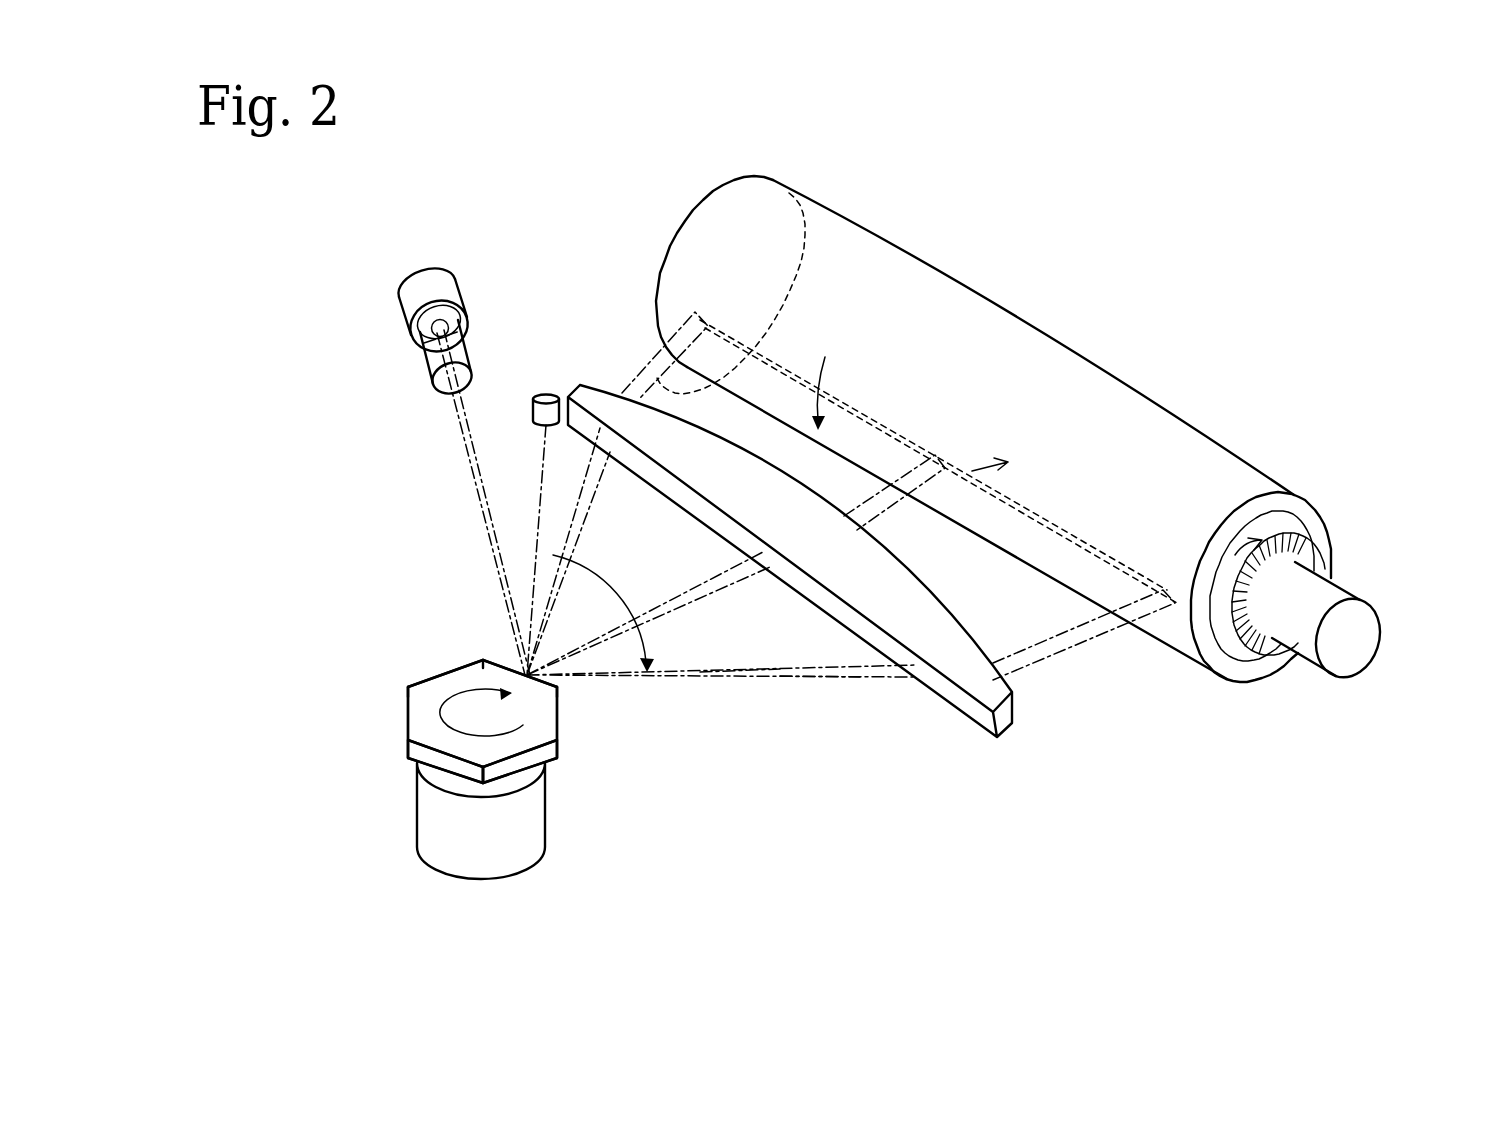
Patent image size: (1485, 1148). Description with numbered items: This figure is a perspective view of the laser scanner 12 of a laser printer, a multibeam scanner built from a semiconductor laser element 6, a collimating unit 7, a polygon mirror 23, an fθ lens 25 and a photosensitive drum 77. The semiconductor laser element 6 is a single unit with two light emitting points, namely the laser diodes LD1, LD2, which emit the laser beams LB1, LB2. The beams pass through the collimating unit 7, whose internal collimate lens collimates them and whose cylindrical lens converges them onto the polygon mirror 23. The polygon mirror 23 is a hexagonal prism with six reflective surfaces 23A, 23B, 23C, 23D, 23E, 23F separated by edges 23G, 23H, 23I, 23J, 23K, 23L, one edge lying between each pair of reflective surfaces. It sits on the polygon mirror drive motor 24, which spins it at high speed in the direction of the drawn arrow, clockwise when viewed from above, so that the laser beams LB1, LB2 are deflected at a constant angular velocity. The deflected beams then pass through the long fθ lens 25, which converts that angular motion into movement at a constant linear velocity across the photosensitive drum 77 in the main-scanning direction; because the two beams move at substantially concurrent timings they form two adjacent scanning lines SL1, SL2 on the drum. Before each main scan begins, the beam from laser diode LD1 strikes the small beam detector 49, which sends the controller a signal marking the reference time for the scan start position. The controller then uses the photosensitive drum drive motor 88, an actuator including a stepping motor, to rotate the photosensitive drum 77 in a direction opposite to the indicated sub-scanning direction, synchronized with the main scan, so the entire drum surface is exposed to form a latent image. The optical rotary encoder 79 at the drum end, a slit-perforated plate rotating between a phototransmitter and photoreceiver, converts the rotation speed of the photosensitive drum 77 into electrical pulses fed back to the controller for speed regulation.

The semiconductor laser element 6 is at (410, 268).
The laser diode LD1 is at (428, 336).
The laser diode LD2 is at (448, 323).
The collimating unit 7 is at (422, 373).
The beam detector 49 is at (538, 395).
The polygon mirror 23 is at (428, 580).
The reflective surface 23A is at (530, 770).
The reflective surface 23B is at (438, 766).
The reflective surface 23C is at (408, 722).
The reflective surface 23D is at (445, 672).
The reflective surface 23E is at (507, 657).
The reflective surface 23F is at (557, 717).
The edge 23G is at (467, 782).
The edge 23H is at (408, 747).
The edge 23I is at (408, 690).
The edge 23J is at (483, 658).
The edge 23K is at (560, 690).
The edge 23L is at (557, 748).
The polygon mirror drive motor 24 is at (545, 830).
The fθ lens 25 is at (962, 692).
The laser beam LB1 is at (765, 668).
The laser beam LB2 is at (820, 679).
The scanning line SL1 is at (773, 317).
The scanning line SL2 is at (657, 380).
The photosensitive drum 77 is at (1240, 455).
The optical rotary encoder 79 is at (1322, 541).
The photosensitive drum drive motor 88 is at (1353, 637).
The laser scanner 12 is at (820, 890).